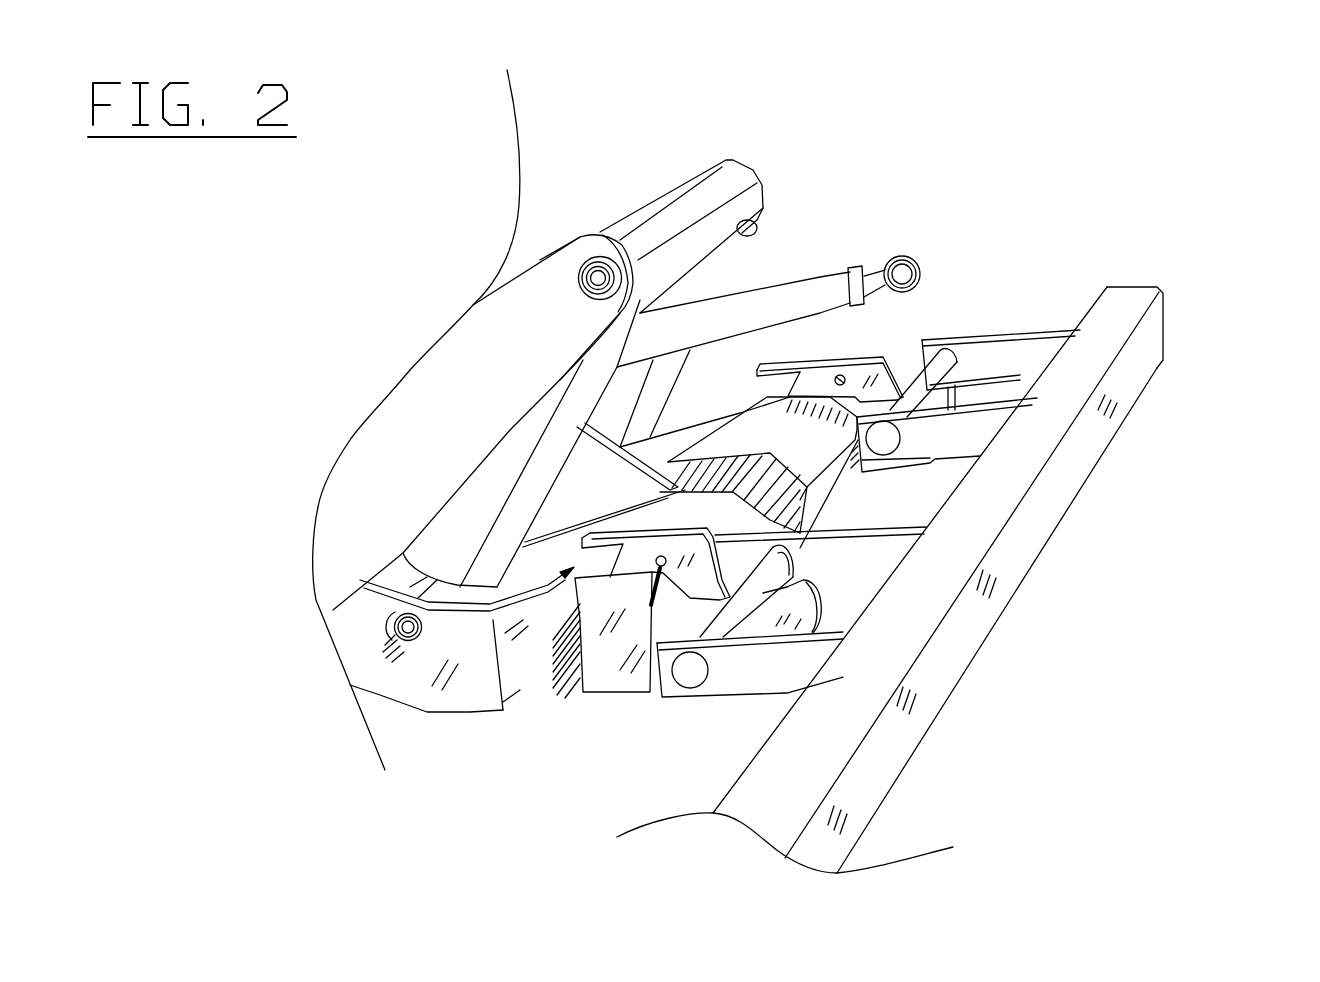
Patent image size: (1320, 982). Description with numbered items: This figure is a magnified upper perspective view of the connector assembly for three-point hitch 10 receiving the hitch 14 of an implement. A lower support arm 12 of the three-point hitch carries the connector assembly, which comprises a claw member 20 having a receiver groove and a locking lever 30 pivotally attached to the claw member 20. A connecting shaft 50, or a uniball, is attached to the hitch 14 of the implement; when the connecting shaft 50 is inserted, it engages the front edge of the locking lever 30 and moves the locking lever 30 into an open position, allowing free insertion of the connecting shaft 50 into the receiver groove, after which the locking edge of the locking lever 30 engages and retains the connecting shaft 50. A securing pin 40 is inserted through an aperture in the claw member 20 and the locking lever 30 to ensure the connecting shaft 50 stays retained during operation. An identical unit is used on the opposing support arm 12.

The connector assembly for three-point hitch 10 is at (1003, 240).
The lower support arm 12 is at (583, 691).
The hitch 14 is at (1240, 500).
The claw member 20 is at (833, 621).
The locking lever 30 is at (565, 612).
The securing pin 40 is at (652, 606).
The connecting shaft 50 is at (800, 541).